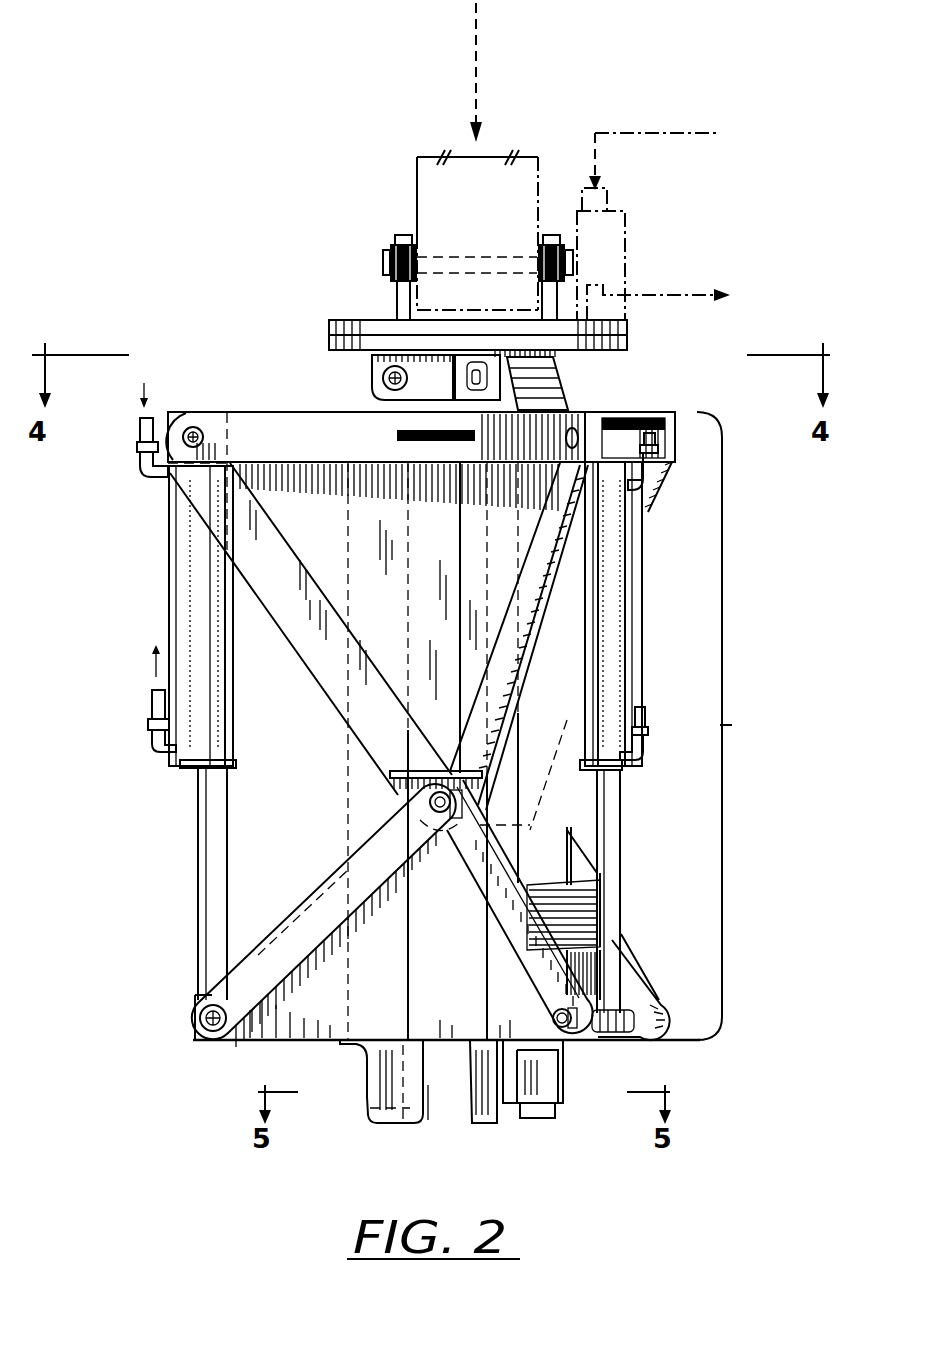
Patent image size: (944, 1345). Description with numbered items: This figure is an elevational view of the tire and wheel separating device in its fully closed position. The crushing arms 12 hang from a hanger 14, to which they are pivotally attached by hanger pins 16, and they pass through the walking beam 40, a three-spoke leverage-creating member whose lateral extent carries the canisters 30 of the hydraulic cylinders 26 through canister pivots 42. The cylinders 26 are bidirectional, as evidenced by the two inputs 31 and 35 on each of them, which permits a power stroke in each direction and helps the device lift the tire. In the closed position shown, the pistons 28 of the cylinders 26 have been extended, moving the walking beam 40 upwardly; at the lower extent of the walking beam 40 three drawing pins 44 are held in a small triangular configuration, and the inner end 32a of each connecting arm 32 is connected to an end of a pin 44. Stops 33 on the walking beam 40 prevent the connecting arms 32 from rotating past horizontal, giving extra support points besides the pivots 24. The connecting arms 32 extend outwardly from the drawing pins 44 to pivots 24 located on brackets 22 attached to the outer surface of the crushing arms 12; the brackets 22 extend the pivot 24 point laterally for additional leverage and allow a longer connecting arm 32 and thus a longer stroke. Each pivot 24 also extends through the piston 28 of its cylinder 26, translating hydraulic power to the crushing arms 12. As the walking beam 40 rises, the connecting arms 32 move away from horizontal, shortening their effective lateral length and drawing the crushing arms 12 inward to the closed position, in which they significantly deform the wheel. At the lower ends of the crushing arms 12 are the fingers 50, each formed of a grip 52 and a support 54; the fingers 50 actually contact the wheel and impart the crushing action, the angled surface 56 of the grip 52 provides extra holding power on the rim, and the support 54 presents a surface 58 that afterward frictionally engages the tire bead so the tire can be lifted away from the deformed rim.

The crushing arm 12 is at (567, 411).
The hanger 14 is at (628, 340).
The hanger pin 16 is at (388, 384).
The bracket 22 is at (300, 1041).
The pivot 24 is at (197, 1023).
The hydraulic cylinder 26 is at (740, 726).
The piston 28 is at (200, 880).
The canister 30 is at (170, 574).
The input 31 is at (138, 470).
The connecting arm 32 is at (332, 880).
The inner end of connecting arm 32a is at (420, 798).
The stop 33 is at (390, 778).
The input 35 is at (166, 754).
The walking beam 40 is at (312, 395).
The canister pivot 42 is at (187, 425).
The drawing pin 44 is at (415, 815).
The crushing arm finger 50 is at (360, 1113).
The grip 52 is at (390, 1124).
The support 54 is at (366, 1072).
The angled surface 56 is at (428, 1100).
The surface 58 is at (510, 1120).